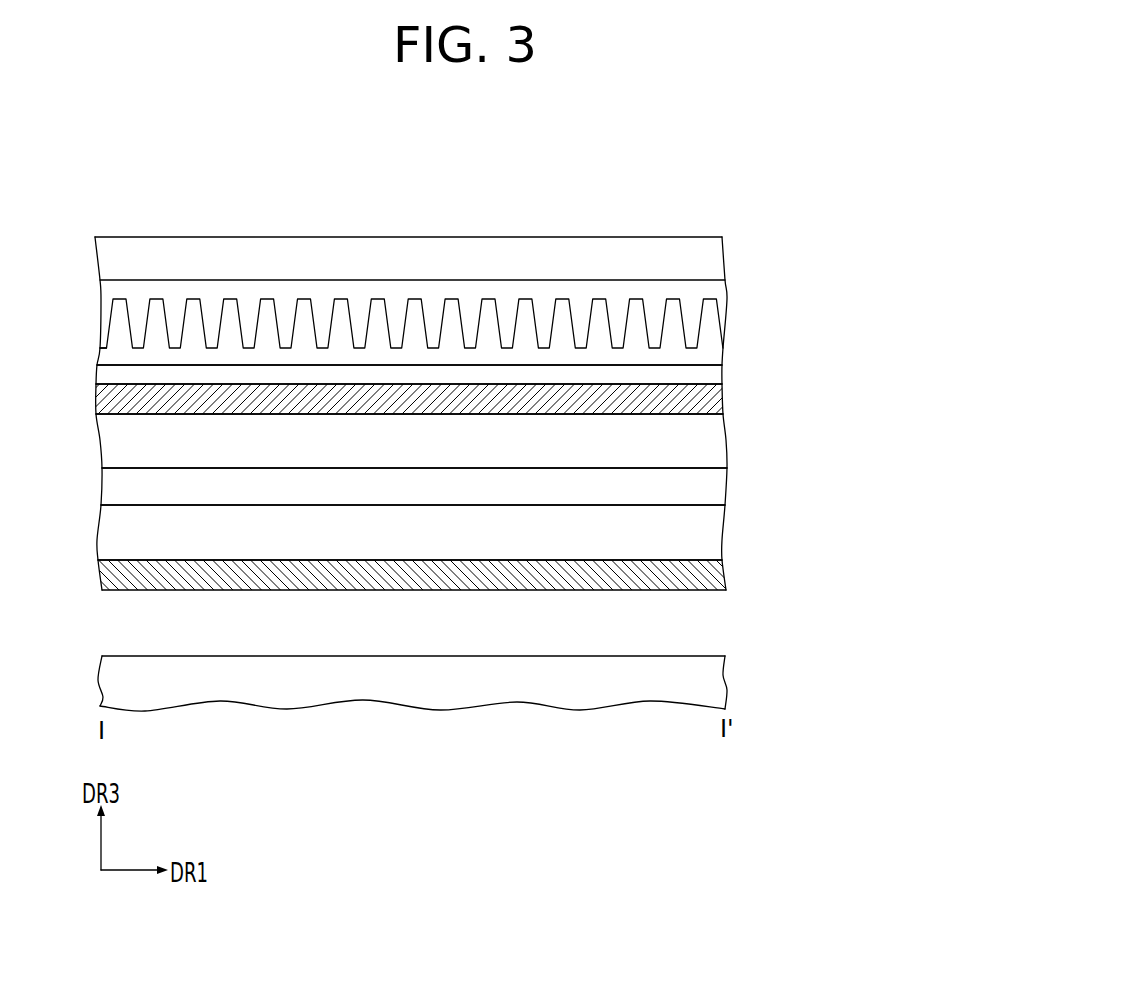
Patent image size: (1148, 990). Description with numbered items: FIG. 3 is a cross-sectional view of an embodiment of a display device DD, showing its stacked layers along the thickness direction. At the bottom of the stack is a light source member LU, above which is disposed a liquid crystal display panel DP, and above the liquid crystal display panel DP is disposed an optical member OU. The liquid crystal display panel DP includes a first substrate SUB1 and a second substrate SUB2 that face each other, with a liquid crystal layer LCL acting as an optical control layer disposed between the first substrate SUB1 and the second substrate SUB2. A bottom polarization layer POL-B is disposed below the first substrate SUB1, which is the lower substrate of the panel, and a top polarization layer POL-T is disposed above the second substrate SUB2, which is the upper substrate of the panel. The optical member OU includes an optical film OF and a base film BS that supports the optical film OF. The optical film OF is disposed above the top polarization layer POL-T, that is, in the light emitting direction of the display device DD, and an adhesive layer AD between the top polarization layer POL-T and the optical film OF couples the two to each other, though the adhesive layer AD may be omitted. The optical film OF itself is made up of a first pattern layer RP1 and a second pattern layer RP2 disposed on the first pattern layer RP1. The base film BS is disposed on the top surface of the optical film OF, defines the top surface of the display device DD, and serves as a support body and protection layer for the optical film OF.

The display device DD is at (489, 358).
The optical member OU is at (506, 301).
The base film BS is at (705, 258).
The optical film OF is at (482, 325).
The second pattern layer RP2 is at (717, 288).
The first pattern layer RP1 is at (715, 356).
The adhesive layer AD is at (713, 374).
The liquid crystal display panel DP is at (478, 488).
The top polarization layer POL-T is at (713, 393).
The second substrate SUB2 is at (717, 440).
The liquid crystal layer LCL is at (713, 485).
The first substrate SUB1 is at (708, 530).
The bottom polarization layer POL-B is at (456, 577).
The light source member LU is at (712, 687).